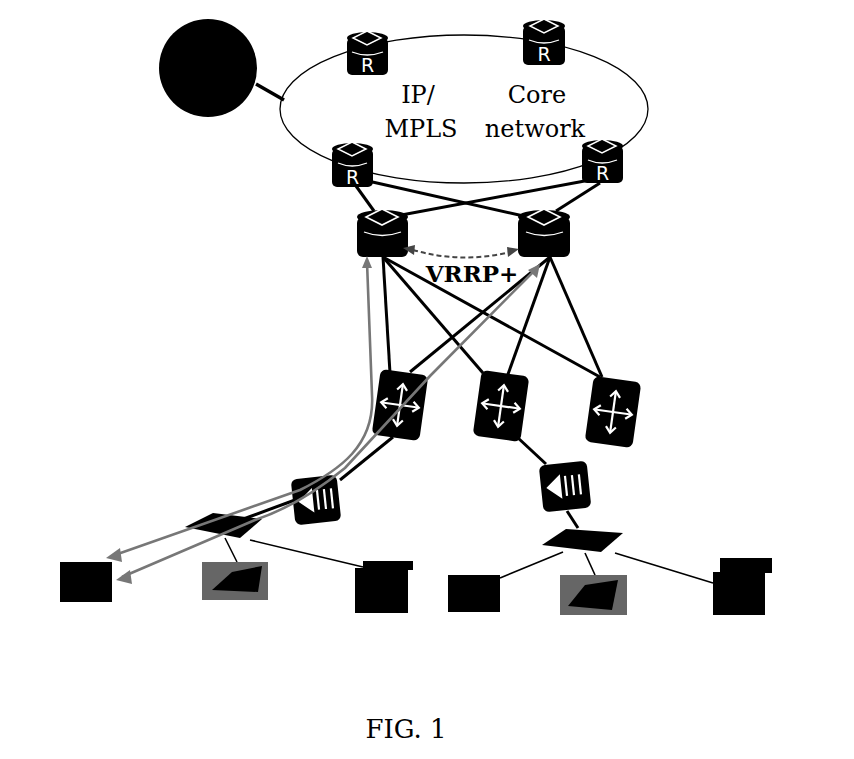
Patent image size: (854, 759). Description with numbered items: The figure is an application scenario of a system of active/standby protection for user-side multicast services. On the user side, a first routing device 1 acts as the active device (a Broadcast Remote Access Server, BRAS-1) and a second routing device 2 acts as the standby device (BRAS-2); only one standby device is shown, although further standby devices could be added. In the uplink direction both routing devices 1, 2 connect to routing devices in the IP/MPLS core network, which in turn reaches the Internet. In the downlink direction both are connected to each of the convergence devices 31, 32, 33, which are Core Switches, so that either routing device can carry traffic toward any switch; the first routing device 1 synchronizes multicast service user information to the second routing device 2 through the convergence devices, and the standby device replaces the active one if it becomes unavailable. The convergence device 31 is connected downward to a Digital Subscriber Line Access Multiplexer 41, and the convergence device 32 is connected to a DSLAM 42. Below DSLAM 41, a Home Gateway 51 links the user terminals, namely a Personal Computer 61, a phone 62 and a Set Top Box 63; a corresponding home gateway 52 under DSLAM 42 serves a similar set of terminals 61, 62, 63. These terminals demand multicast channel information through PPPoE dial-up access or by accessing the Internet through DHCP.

The first routing device 1 is at (357, 235).
The second routing device 2 is at (571, 240).
The convergence device 31 is at (372, 403).
The convergence device 32 is at (527, 409).
The convergence device 33 is at (641, 406).
The Digital Subscriber Line Access Multiplexer 41 is at (303, 478).
The Digital Subscriber Line Access Multiplexer 42 is at (593, 488).
The Home Gateway 51 is at (200, 513).
The second hub 52 is at (608, 530).
The Personal Computer 61 is at (86, 563).
The phone 62 is at (212, 590).
The Set Top Box 63 is at (389, 565).